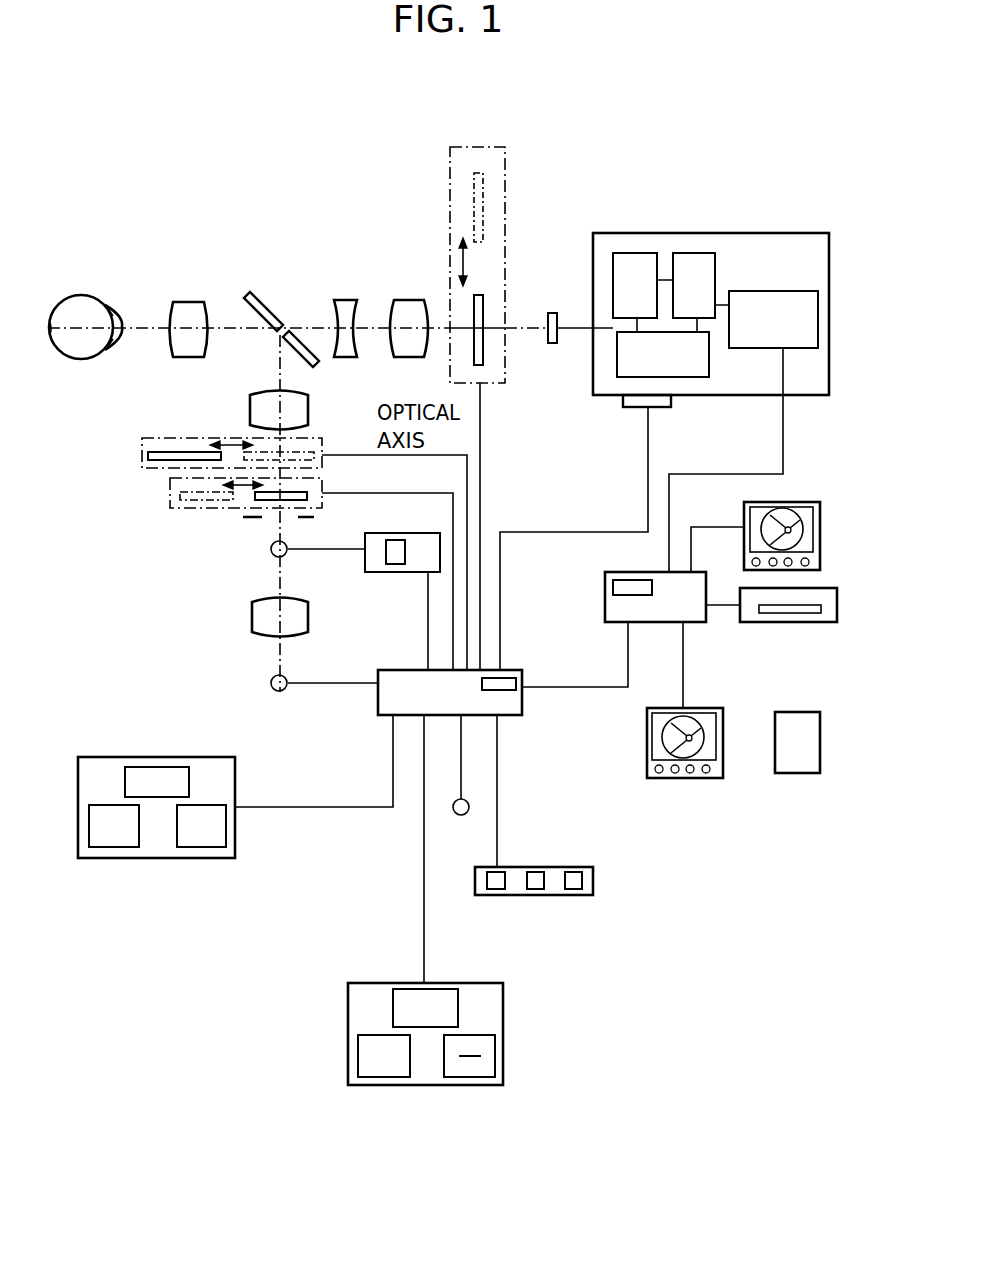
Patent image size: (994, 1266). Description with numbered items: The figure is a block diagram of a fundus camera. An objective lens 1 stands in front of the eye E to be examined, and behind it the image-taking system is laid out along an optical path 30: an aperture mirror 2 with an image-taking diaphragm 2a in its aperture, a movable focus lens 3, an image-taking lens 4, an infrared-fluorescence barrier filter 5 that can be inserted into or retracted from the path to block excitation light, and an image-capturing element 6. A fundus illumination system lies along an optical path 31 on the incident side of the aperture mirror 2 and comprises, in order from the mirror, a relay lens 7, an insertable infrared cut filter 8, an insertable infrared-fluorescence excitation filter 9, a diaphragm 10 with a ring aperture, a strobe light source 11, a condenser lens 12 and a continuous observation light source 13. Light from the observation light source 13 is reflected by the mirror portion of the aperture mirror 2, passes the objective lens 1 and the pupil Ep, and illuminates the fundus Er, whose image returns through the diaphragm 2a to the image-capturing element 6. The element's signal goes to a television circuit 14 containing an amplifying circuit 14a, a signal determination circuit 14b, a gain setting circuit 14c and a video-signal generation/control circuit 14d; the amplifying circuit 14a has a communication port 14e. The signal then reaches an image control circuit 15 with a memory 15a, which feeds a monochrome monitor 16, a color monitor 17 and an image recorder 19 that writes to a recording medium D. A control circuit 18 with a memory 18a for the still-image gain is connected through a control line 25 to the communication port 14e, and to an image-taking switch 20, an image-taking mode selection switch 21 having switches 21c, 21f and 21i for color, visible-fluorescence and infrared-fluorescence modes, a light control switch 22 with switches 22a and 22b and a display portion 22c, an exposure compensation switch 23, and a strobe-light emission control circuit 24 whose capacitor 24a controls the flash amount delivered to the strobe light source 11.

The eye to be examined E is at (83, 360).
The fundus Er is at (52, 327).
The pupil Ep is at (122, 319).
The objective lens 1 is at (188, 302).
The aperture mirror 2 is at (268, 301).
The image-taking diaphragm 2a is at (290, 330).
The focus lens 3 is at (345, 300).
The image-taking lens 4 is at (405, 300).
The infrared-fluorescence barrier filter 5 is at (475, 147).
The image-capturing element 6 is at (552, 313).
The relay lens 7 is at (250, 410).
The infrared cut filter 8 is at (142, 454).
The infrared-fluorescence excitation filter 9 is at (170, 494).
The diaphragm 10 is at (255, 520).
The strobe light source 11 is at (270, 551).
The condenser lens 12 is at (252, 616).
The observation light source 13 is at (272, 686).
The television circuit 14 is at (780, 233).
The amplifying circuit 14a is at (635, 253).
The signal determination circuit 14b is at (697, 253).
The gain setting circuit 14c is at (690, 377).
The video-signal generation/control circuit 14d is at (829, 320).
The communication port 14e is at (630, 408).
The image control circuit 15 is at (605, 612).
The memory 15a is at (613, 587).
The monochrome monitor 16 is at (688, 778).
The color monitor 17 is at (820, 531).
The control circuit 18 is at (378, 700).
The memory 18a is at (508, 692).
The image recorder 19 is at (772, 622).
The image-taking switch 20 is at (460, 815).
The image-taking mode selection switch 21 is at (593, 880).
The switch 21c is at (496, 889).
The switch 21f is at (535, 872).
The switch 21i is at (573, 889).
The light control switch 22 is at (108, 757).
The switch 22a is at (112, 847).
The switch 22b is at (198, 847).
The display portion 22c is at (160, 767).
The exposure compensation switch 23 is at (427, 1085).
The strobe-light emission control circuit 24 is at (365, 566).
The capacitor 24a is at (398, 572).
The control line 25 is at (540, 532).
The optical path 30 is at (443, 330).
The optical path 31 is at (283, 370).
The recording medium D is at (797, 773).